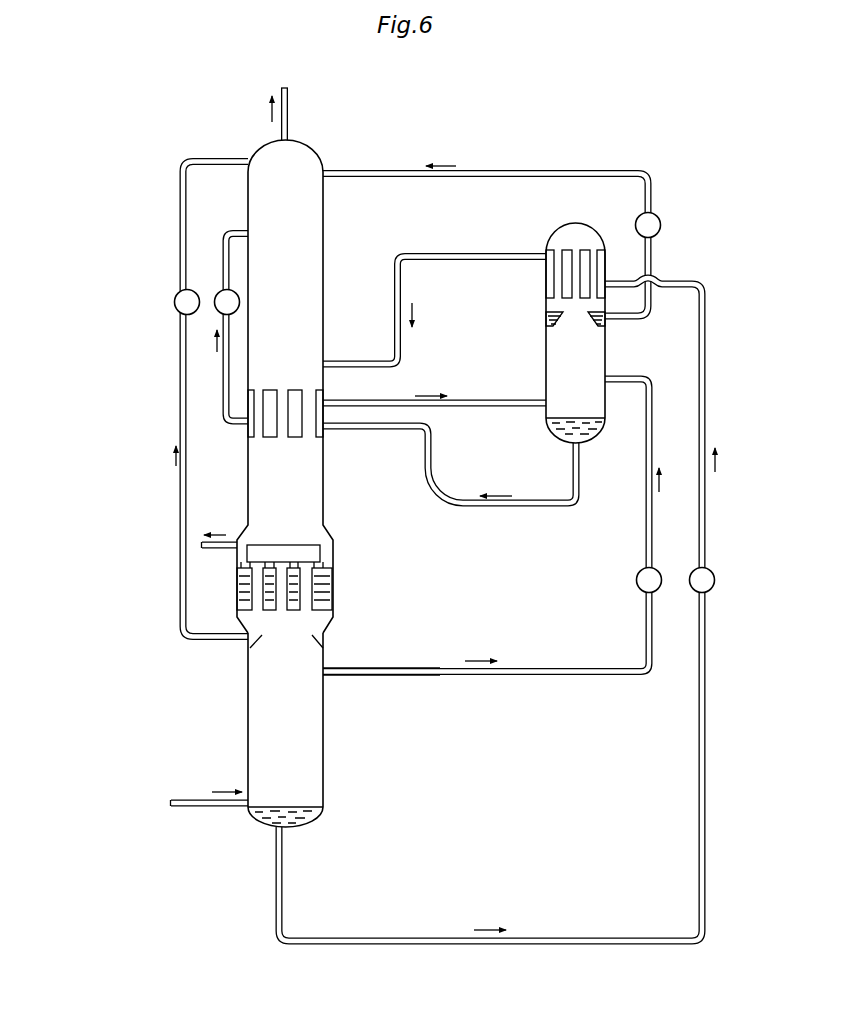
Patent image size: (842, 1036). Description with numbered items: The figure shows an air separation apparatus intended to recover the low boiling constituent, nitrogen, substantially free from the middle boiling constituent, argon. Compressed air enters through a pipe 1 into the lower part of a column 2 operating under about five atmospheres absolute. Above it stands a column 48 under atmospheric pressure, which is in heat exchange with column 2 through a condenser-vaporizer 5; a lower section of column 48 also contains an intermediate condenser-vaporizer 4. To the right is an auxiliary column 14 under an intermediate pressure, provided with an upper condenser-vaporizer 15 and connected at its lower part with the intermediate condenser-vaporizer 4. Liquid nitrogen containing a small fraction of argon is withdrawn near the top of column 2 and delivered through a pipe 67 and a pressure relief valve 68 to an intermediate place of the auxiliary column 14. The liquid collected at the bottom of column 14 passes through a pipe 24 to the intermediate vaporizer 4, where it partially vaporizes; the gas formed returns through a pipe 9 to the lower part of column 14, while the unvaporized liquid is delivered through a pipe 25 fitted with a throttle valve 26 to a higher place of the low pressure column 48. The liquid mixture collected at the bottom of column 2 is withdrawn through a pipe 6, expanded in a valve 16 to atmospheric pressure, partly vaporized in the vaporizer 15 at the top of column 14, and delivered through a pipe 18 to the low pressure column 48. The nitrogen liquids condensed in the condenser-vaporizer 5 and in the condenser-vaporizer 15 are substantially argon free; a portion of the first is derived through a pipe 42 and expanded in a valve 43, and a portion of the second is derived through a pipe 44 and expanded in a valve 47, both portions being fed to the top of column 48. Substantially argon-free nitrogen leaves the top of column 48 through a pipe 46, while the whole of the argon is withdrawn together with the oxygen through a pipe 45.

The pipe 1 is at (198, 792).
The column 2 is at (248, 737).
The intermediate condenser-vaporizer 4 is at (306, 407).
The condenser-vaporizer 5 is at (313, 590).
The pipe 6 is at (707, 781).
The pipe 9 is at (490, 400).
The auxiliary column 14 is at (605, 362).
The upper condenser-vaporizer 15 is at (590, 272).
The valve 16 is at (737, 571).
The pipe 18 is at (462, 252).
The pipe 24 is at (475, 510).
The pipe 25 is at (222, 380).
The throttle valve 26 is at (219, 291).
The pipe 42 is at (183, 503).
The valve 43 is at (177, 292).
The pipe 44 is at (598, 168).
The pipe 45 is at (224, 551).
The pipe 46 is at (290, 120).
The valve 47 is at (661, 225).
The column 48 is at (326, 264).
The pipe 67 is at (433, 665).
The pressure relief valve 68 is at (636, 580).